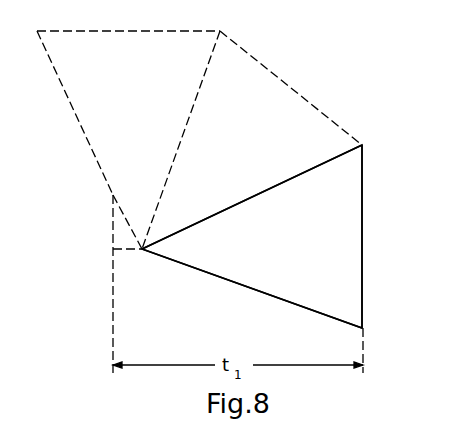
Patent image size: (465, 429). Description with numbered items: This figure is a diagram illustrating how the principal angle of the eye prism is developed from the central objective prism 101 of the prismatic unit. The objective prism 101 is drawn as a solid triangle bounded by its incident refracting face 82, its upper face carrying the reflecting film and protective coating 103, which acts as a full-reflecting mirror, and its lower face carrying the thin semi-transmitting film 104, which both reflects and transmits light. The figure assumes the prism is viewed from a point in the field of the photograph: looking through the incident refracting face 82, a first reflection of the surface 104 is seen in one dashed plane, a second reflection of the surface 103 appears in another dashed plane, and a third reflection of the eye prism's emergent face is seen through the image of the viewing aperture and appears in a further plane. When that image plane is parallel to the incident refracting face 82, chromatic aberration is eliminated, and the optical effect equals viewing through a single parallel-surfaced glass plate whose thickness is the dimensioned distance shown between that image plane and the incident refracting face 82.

The incident refracting face 82 is at (363, 197).
The objective prism 101 is at (342, 273).
The reflecting film and protective coating 103 is at (305, 167).
The semi-transmitting film 104 is at (290, 302).